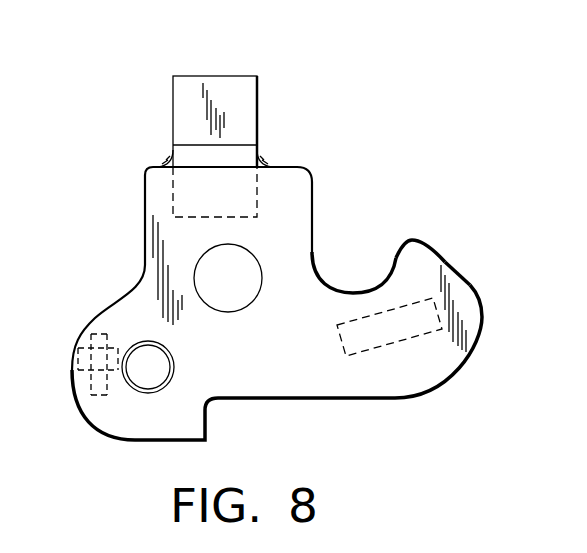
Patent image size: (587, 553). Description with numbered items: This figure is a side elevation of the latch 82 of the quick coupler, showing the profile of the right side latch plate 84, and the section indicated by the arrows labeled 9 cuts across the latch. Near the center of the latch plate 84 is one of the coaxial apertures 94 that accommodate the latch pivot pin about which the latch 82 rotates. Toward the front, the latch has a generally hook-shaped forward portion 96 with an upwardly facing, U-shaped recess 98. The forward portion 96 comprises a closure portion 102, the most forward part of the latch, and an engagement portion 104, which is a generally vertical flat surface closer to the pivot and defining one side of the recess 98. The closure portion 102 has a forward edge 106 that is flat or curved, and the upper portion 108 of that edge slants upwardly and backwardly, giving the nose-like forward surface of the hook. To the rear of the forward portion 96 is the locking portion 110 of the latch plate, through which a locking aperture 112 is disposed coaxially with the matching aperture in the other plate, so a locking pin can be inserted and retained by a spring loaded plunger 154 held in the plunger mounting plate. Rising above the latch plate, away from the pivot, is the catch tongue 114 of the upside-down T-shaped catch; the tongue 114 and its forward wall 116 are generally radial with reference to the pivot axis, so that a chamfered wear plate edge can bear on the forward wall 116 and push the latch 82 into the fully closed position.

The catch tongue 114 is at (235, 99).
The forward wall of the catch tongue 116 is at (258, 113).
The engagement portion 104 is at (313, 208).
The closure portion 102 is at (433, 243).
The upper portion of the forward edge 108 is at (458, 268).
The forward portion 96 is at (478, 289).
The forward edge 106 is at (484, 323).
The upwardly facing recess 98 is at (368, 263).
The coaxial apertures 94 is at (262, 272).
The right side latch plate 84 is at (310, 338).
The latch 82 is at (306, 384).
The locking portion 110 is at (227, 382).
The locking apertures 112 is at (171, 357).
The spring loaded plunger 154 is at (74, 352).
The section line 9- 9 is at (495, 470).